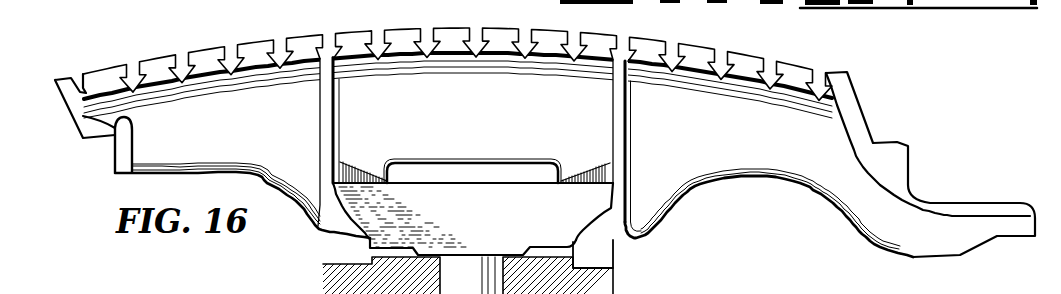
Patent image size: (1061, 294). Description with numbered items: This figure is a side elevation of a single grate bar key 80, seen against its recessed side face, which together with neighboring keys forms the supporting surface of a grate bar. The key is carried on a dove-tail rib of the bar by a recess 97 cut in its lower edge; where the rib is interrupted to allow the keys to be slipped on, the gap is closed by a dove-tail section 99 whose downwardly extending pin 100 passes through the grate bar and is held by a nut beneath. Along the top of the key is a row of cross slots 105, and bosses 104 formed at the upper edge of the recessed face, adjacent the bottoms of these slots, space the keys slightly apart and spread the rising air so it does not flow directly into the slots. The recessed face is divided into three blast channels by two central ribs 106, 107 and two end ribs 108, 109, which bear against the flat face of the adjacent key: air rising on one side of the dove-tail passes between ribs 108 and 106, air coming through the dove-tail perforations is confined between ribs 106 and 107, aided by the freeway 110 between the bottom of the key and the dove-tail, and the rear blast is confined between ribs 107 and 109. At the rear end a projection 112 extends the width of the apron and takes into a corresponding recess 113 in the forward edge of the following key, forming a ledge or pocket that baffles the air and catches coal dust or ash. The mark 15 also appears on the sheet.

The section line indicator 15 is at (457, 0).
The key 80 is at (828, 192).
The recess 97 is at (617, 241).
The dove-tail section 99 is at (452, 215).
The pin 100 is at (407, 258).
The bosses 104 is at (218, 2).
The cross slot 105 is at (335, 33).
The central rib 106 is at (320, 124).
The central rib 107 is at (627, 119).
The end rib 108 is at (133, 132).
The end rib 109 is at (917, 202).
The freeway 110 is at (473, 165).
The projection 112 is at (912, 146).
The recess 113 is at (108, 142).